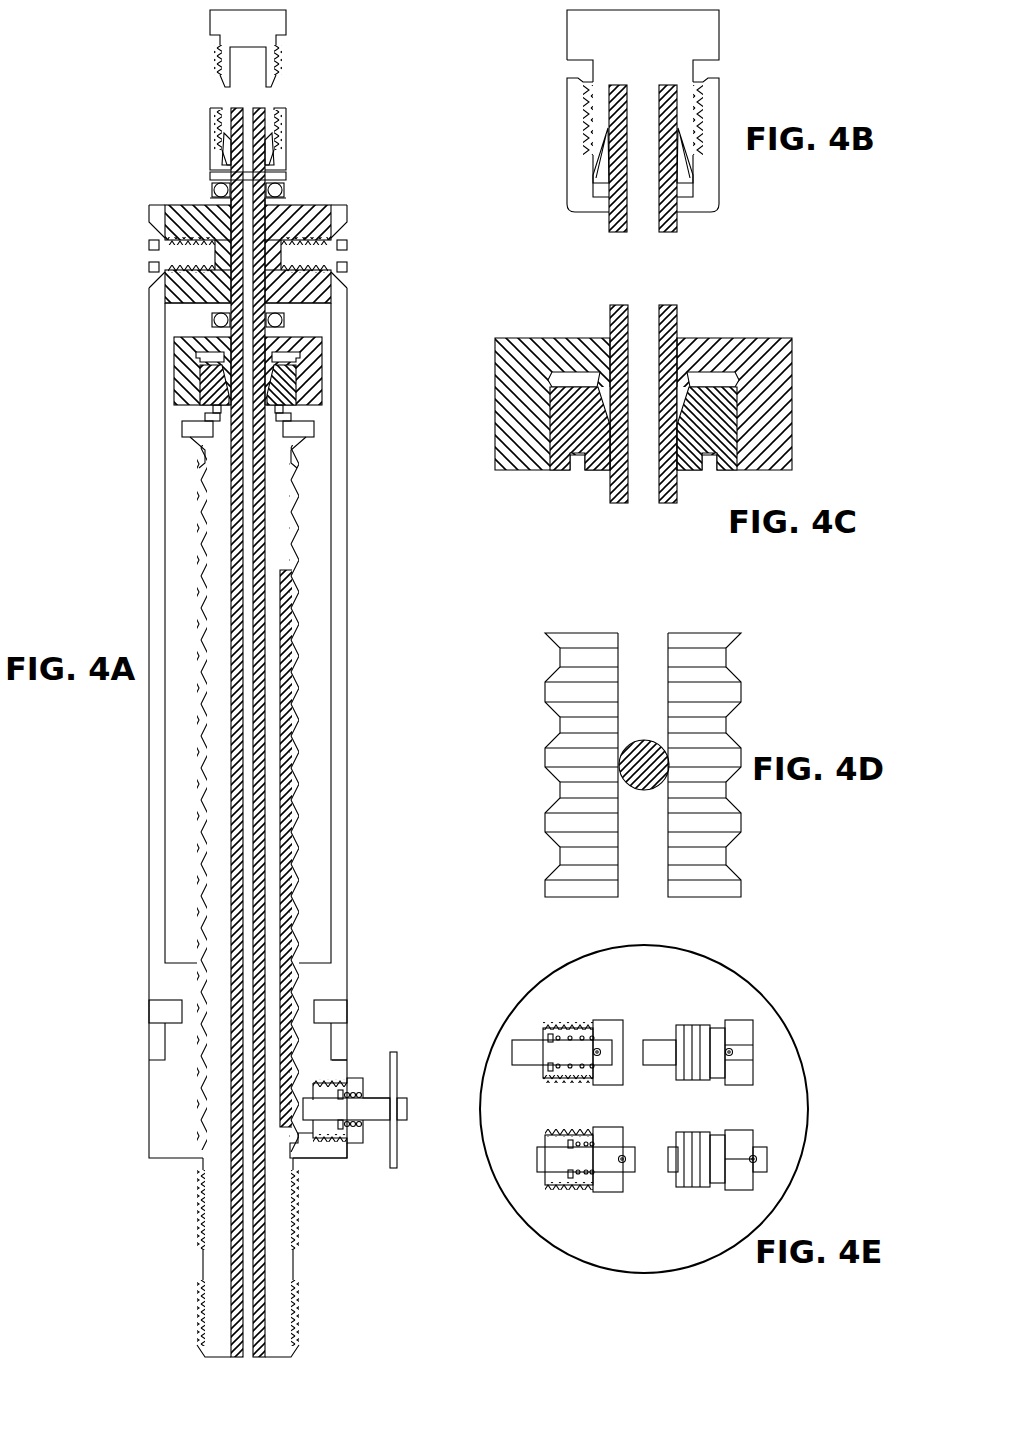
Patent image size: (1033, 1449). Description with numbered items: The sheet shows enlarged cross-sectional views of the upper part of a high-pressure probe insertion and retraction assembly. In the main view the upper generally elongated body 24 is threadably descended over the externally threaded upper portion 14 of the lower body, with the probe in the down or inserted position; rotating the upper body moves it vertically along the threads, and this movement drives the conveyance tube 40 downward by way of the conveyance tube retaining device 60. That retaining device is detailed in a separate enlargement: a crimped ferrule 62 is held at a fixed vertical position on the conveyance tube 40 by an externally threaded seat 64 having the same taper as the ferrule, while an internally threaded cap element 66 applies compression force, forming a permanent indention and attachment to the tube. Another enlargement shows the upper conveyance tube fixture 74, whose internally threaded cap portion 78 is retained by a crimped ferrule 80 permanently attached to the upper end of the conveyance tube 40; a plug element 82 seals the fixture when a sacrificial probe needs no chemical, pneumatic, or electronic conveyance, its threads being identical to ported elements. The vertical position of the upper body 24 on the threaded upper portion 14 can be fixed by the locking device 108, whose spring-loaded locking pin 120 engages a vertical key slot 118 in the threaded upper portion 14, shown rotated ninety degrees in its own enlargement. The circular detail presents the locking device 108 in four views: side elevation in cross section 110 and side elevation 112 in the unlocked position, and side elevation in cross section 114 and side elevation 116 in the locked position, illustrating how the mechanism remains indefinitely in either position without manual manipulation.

In FIG. 4A, the externally threaded upper portion 14 is at (198, 770).
In FIG. 4A, the upper generally elongated body 24 is at (149, 570).
In FIG. 4B, the conveyance tube 40 is at (616, 228).
In FIG. 4C, the conveyance tube 40 is at (619, 480).
In FIG. 4C, the conveyance tube retaining device 60 is at (484, 404).
In FIG. 4C, the crimped ferrule 62 is at (690, 374).
In FIG. 4C, the externally threaded seat 64 is at (718, 435).
In FIG. 4C, the internally threaded cap element 66 is at (772, 385).
In FIG. 4B, the upper conveyance tube fixture 74 is at (543, 103).
In FIG. 4B, the internally threaded cap portion 78 is at (712, 190).
In FIG. 4B, the crimped ferrule 80 is at (602, 183).
In FIG. 4B, the plug element 82 is at (650, 33).
In FIG. 4A, the locking device 108 is at (374, 1055).
In FIG. 4E, the locking device 108 is at (782, 1004).
In FIG. 4E, the side elevation in cross section (unlocked position) 110 is at (610, 1194).
In FIG. 4E, the side elevation (unlocked position) 112 is at (738, 1178).
In FIG. 4E, the side elevation in cross section (locked position) 114 is at (610, 1023).
In FIG. 4E, the side elevation (locked position) 116 is at (736, 1030).
In FIG. 4A, the vertical key slot 118 is at (300, 697).
In FIG. 4D, the vertical key slot 118 is at (648, 830).
In FIG. 4A, the locking pin 120 is at (366, 1118).